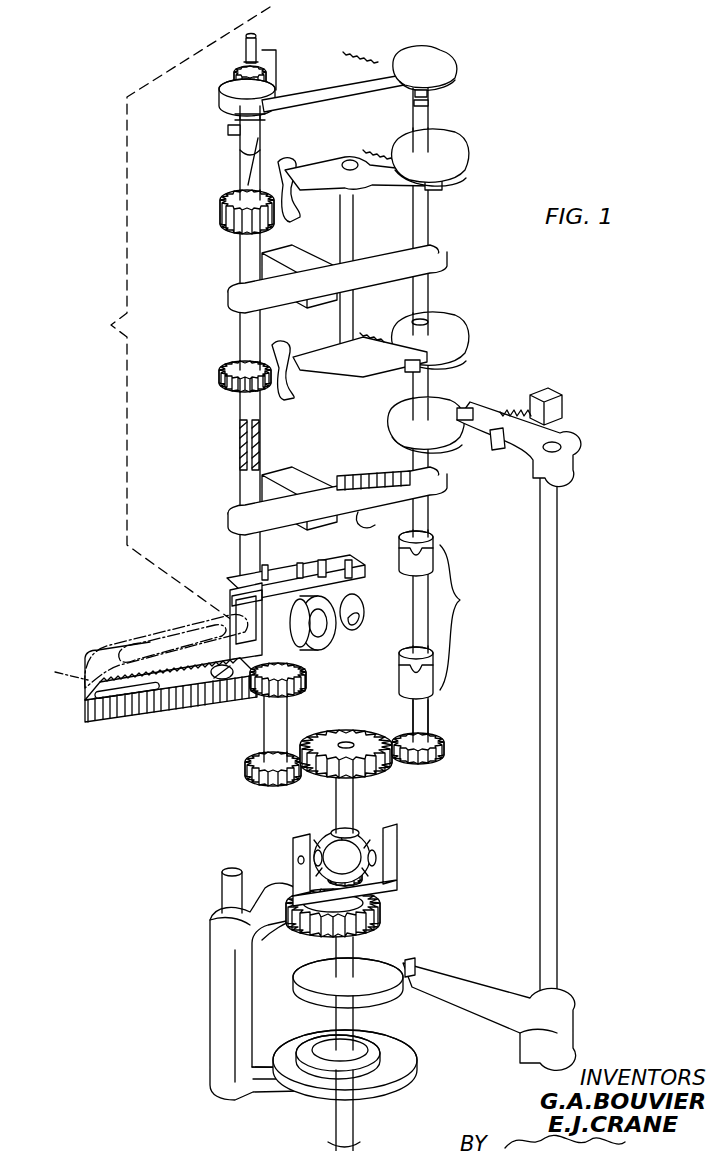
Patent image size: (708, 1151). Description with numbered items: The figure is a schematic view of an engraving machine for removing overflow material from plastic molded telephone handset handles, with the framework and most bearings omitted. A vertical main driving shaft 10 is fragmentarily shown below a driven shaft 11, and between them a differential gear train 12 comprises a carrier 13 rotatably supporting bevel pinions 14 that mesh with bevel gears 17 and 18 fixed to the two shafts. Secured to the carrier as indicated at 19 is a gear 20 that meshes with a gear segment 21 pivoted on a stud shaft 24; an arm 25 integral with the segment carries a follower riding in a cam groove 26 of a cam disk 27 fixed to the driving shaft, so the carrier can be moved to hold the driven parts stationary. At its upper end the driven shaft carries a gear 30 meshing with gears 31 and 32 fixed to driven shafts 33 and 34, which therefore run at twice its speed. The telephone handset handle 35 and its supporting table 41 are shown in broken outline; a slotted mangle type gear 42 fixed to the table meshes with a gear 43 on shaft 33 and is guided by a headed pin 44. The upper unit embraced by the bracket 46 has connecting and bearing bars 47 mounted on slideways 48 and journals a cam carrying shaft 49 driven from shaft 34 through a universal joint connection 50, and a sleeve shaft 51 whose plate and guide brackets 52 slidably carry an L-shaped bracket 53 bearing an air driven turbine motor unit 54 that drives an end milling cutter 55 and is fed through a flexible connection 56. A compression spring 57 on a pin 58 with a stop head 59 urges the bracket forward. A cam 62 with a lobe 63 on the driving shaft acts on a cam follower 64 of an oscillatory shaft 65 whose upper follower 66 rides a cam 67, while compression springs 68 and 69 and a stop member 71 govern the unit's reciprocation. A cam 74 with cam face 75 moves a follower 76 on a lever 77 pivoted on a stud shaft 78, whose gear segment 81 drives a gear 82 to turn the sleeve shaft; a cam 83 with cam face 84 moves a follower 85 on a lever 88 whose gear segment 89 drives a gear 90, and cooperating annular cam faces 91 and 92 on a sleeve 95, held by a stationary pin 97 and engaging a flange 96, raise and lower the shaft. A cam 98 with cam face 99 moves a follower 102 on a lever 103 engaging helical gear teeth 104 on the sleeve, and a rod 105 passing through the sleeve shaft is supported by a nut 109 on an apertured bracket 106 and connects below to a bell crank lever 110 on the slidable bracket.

The main driving shaft 10 is at (330, 1148).
The driven shaft 11 is at (336, 799).
The differential gear train 12 is at (312, 835).
The carrier 13 is at (397, 877).
The bevel pinions 14 is at (318, 858).
The bevel gear 17 is at (365, 885).
The bevel gear 18 is at (358, 833).
The securing point of gear to carrier 19 is at (378, 905).
The gear 20 is at (318, 938).
The gear segment 21 is at (262, 903).
The stud shaft 24 is at (232, 870).
The arm 25 is at (265, 1092).
The cam groove 26 is at (312, 1048).
The cam disk 27 is at (395, 1060).
The gear 30 is at (350, 738).
The gear 31 is at (245, 770).
The gear 32 is at (446, 742).
The driven shaft 33 is at (264, 728).
The driven shaft 34 is at (434, 712).
The telephone handset handle 35 is at (130, 630).
The supporting head or table 41 is at (58, 671).
The mangle type gear 42 is at (110, 722).
The gear 43 is at (307, 682).
The headed pin 44 is at (144, 710).
The bracket 46 is at (111, 325).
The connecting and bearing bars 47 is at (357, 245).
The slideways 48 is at (285, 282).
The cam carrying shaft 49 is at (432, 296).
The universal joint connection 50 is at (442, 614).
The sleeve shaft 51 is at (240, 478).
The guide brackets 52 is at (265, 578).
The L-shaped bracket 53 is at (336, 633).
The air driven turbine motor unit 54 is at (356, 596).
The end milling cutter 55 is at (243, 620).
The flexible connection 56 is at (358, 616).
The compression spring 57 is at (322, 575).
The pin 58 is at (350, 578).
The head 59 is at (300, 577).
The cam 62 is at (375, 995).
The cam lobe 63 is at (408, 962).
The cam follower 64 is at (418, 970).
The oscillatory shaft 65 is at (557, 872).
The cam follower 66 is at (468, 410).
The cam 67 is at (432, 408).
The compression spring 68 is at (365, 472).
The compression spring 69 is at (535, 400).
The stop member 71 is at (494, 450).
The cam 74 is at (445, 332).
The cam face 75 is at (408, 322).
The follower 76 is at (410, 372).
The lever 77 is at (338, 370).
The stud shaft 78 is at (340, 323).
The gear segment 81 is at (286, 398).
The gear 82 is at (219, 385).
The cam 83 is at (466, 152).
The cam face 84 is at (410, 138).
The follower 85 is at (438, 186).
The lever 88 is at (428, 228).
The gear segment 89 is at (284, 166).
The gear 90 is at (222, 206).
The annular cam face 91 is at (255, 185).
The cam face 92 is at (243, 162).
The sleeve 95 is at (232, 104).
The flange 96 is at (242, 63).
The stationary pin 97 is at (228, 130).
The cam 98 is at (442, 58).
The cam face 99 is at (432, 92).
The follower 102 is at (430, 103).
The lever 103 is at (350, 88).
The helical gear teeth 104 is at (234, 78).
The rod 105 is at (258, 42).
The apertured bracket 106 is at (276, 58).
The nut 109 is at (248, 50).
The bell crank lever 110 is at (237, 596).